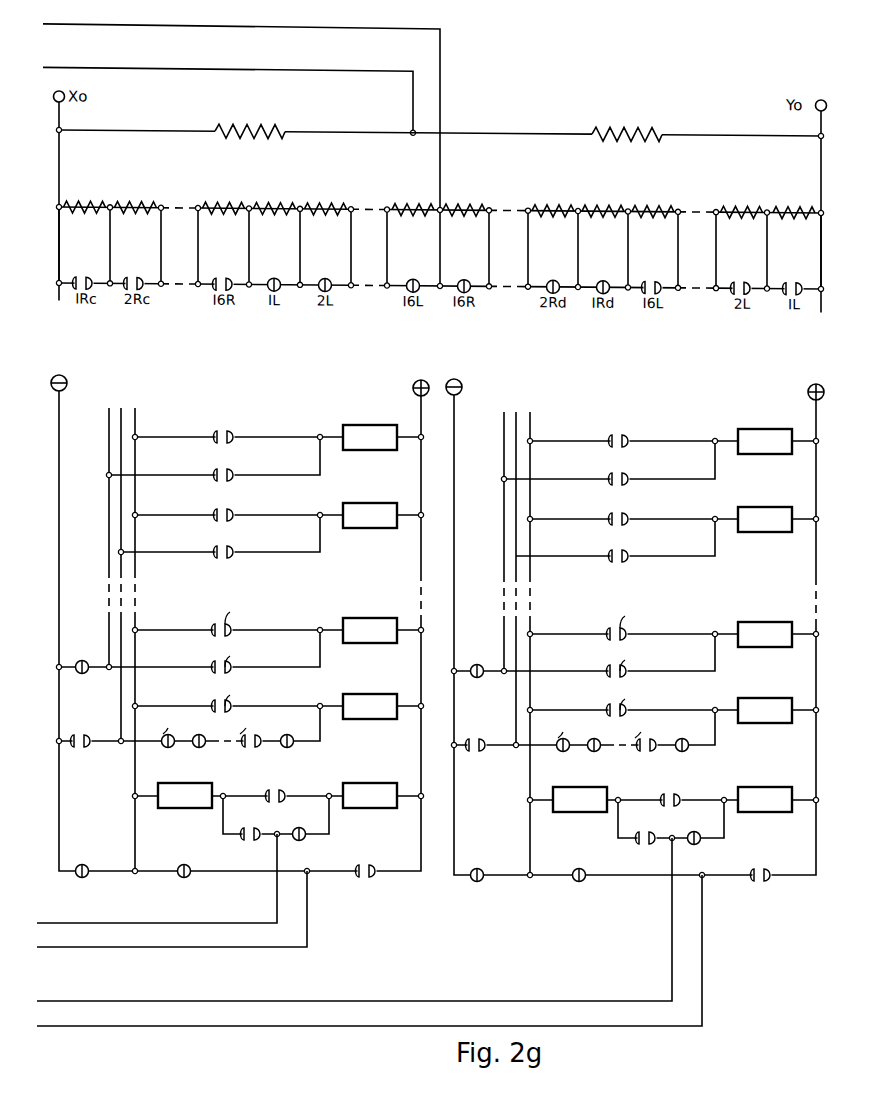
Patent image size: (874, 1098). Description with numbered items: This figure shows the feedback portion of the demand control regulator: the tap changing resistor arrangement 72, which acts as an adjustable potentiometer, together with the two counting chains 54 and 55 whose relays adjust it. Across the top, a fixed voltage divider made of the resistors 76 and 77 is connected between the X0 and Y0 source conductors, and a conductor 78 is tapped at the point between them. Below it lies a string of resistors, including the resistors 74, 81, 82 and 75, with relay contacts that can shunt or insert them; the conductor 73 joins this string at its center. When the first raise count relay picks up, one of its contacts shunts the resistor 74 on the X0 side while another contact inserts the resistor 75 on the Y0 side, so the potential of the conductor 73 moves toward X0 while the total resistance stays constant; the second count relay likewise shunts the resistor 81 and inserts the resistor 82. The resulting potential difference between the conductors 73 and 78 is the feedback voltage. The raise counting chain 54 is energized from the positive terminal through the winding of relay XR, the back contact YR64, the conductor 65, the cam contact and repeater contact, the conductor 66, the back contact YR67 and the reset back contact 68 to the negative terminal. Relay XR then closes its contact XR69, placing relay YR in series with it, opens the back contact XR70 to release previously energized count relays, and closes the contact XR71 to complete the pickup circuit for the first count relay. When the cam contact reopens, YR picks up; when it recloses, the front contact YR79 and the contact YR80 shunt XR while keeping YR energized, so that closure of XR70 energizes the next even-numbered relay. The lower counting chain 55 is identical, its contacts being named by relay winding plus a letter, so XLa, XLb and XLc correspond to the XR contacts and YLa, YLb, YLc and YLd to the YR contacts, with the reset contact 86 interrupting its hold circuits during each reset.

The tap changing resistor arrangement 72 is at (485, 167).
The conductor 73 is at (440, 257).
The resistor 74 is at (80, 203).
The resistor 75 is at (597, 203).
The resistor 76 is at (252, 124).
The resistor 77 is at (626, 124).
The conductor 78 is at (297, 68).
The resistor 81 is at (128, 203).
The resistor 82 is at (547, 203).
The counting chain 54 is at (312, 411).
The counting chain 55 is at (635, 638).
The conductor 65 is at (148, 923).
The conductor 66 is at (150, 947).
The reset relay back contact 68 is at (91, 854).
The reset relay contact 86 is at (477, 862).
The back contact of relay XR XR70 is at (91, 650).
The contact of relay XR XR71 is at (88, 725).
The contact of relay XR XR69 is at (272, 789).
The back contact of relay YR YR64 is at (297, 827).
The back contact of relay YR YR67 is at (182, 864).
The front contact of relay YR YR79 is at (374, 856).
The contact of relay YR YR80 is at (248, 842).
The first contact of relay XL XLa is at (653, 791).
The contact of relay XL XLb is at (584, 731).
The contact of relay XL XLc is at (479, 683).
The contact of relay YL YLa is at (569, 863).
The contact of relay YL YLb is at (760, 863).
The contact of relay YL YLc is at (641, 848).
The contact of relay YL YLd is at (692, 828).